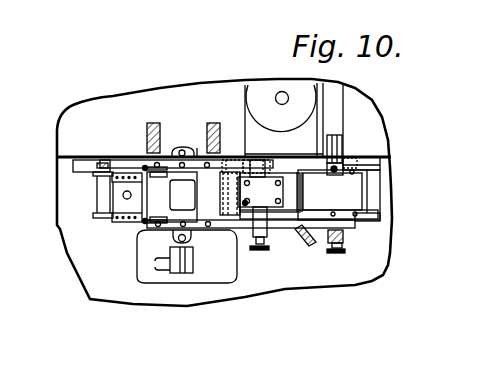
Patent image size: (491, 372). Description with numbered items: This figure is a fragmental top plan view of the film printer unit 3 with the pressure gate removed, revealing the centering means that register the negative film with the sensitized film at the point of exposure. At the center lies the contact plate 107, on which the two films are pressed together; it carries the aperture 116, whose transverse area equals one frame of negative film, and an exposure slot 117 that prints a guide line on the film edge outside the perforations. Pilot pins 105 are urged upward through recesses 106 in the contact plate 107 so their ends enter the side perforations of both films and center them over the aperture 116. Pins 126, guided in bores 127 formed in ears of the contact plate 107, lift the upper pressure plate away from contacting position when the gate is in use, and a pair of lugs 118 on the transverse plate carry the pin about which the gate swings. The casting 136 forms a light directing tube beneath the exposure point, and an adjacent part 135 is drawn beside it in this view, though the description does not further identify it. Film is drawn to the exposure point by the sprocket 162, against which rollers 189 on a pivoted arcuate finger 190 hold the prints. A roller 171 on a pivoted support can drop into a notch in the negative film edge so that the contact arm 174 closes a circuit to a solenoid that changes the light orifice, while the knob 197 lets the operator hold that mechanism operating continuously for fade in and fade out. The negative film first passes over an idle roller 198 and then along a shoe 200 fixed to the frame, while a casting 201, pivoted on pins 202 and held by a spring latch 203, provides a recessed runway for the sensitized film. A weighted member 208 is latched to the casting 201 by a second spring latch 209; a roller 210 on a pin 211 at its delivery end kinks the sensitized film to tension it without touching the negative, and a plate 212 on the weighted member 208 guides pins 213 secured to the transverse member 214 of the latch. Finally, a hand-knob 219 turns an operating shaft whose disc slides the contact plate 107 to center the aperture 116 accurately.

The film printer unit 3 is at (213, 90).
The pilot pins 105 is at (97, 216).
The recesses 106 is at (147, 167).
The contact plate 107 is at (199, 165).
The aperture 116 is at (117, 218).
The exposure slot 117 is at (180, 148).
The lugs 118 is at (145, 132).
The pins 126 is at (182, 150).
The bores 127 is at (190, 148).
The switch block 135 is at (193, 273).
The casting 136 is at (170, 272).
The sprocket 162 is at (145, 220).
The roller 171 is at (339, 195).
The contact arm 174 is at (337, 145).
The rollers 189 is at (100, 196).
The arcuate finger 190 is at (90, 168).
The knob 197 is at (284, 92).
The idle roller 198 is at (370, 219).
The shoe 200 is at (352, 229).
The casting 201 is at (328, 245).
The pins 202 is at (362, 157).
The spring latch 203 is at (338, 253).
The weighted member 208 is at (278, 218).
The second spring latch 209 is at (258, 251).
The roller 210 is at (230, 160).
The pin 211 is at (193, 195).
The plate 212 is at (280, 205).
The pins 213 is at (269, 186).
The transverse member 214 is at (237, 276).
The hand-knob 219 is at (312, 248).